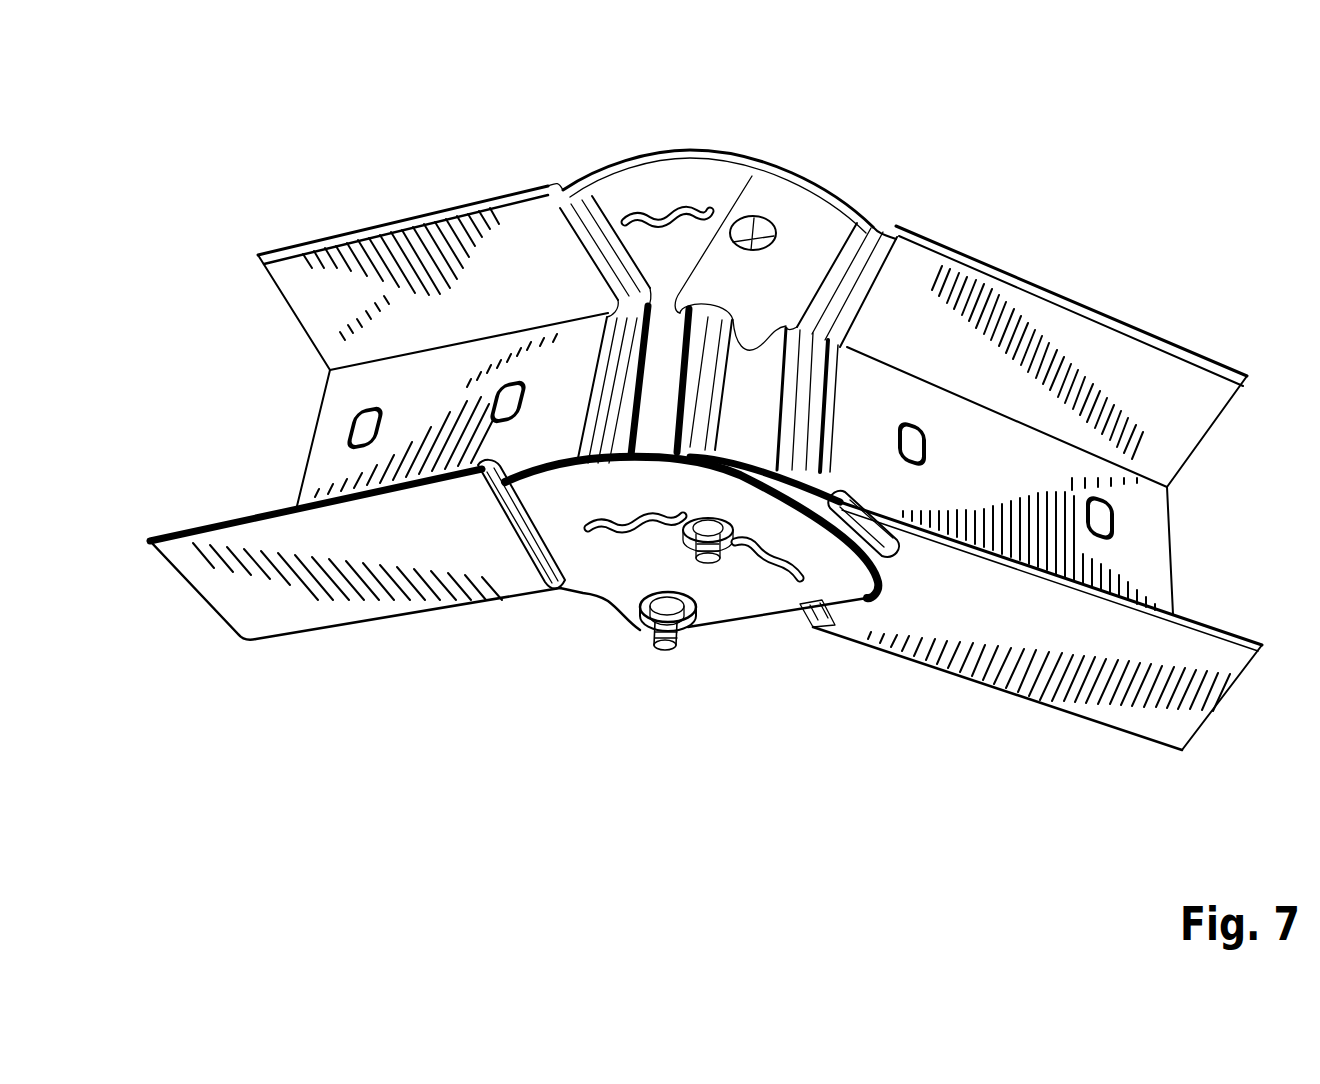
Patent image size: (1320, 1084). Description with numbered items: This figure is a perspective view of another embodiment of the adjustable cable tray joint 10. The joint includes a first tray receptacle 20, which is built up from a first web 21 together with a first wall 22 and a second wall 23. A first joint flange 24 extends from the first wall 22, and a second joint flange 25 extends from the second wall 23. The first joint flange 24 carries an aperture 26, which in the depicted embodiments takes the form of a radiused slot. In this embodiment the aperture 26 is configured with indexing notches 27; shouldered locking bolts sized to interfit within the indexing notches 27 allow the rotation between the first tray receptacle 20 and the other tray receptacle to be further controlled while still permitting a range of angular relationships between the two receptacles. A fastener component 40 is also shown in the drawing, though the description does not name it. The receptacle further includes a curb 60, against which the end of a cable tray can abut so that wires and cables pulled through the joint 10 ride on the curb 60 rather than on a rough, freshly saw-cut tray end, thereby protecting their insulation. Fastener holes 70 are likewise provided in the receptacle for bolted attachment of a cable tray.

The adjustable cable tray joint 10 is at (268, 122).
The first tray receptacle 20 is at (417, 620).
The first web 21 is at (347, 397).
The first wall 22 is at (260, 607).
The second wall 23 is at (297, 287).
The first joint flange 24 is at (612, 570).
The second joint flange 25 is at (681, 187).
The aperture 26 is at (782, 572).
The indexing notches 27 is at (593, 518).
The fastener bolt 40 is at (663, 652).
The curb 60 is at (605, 388).
The fastener holes 70 is at (912, 447).